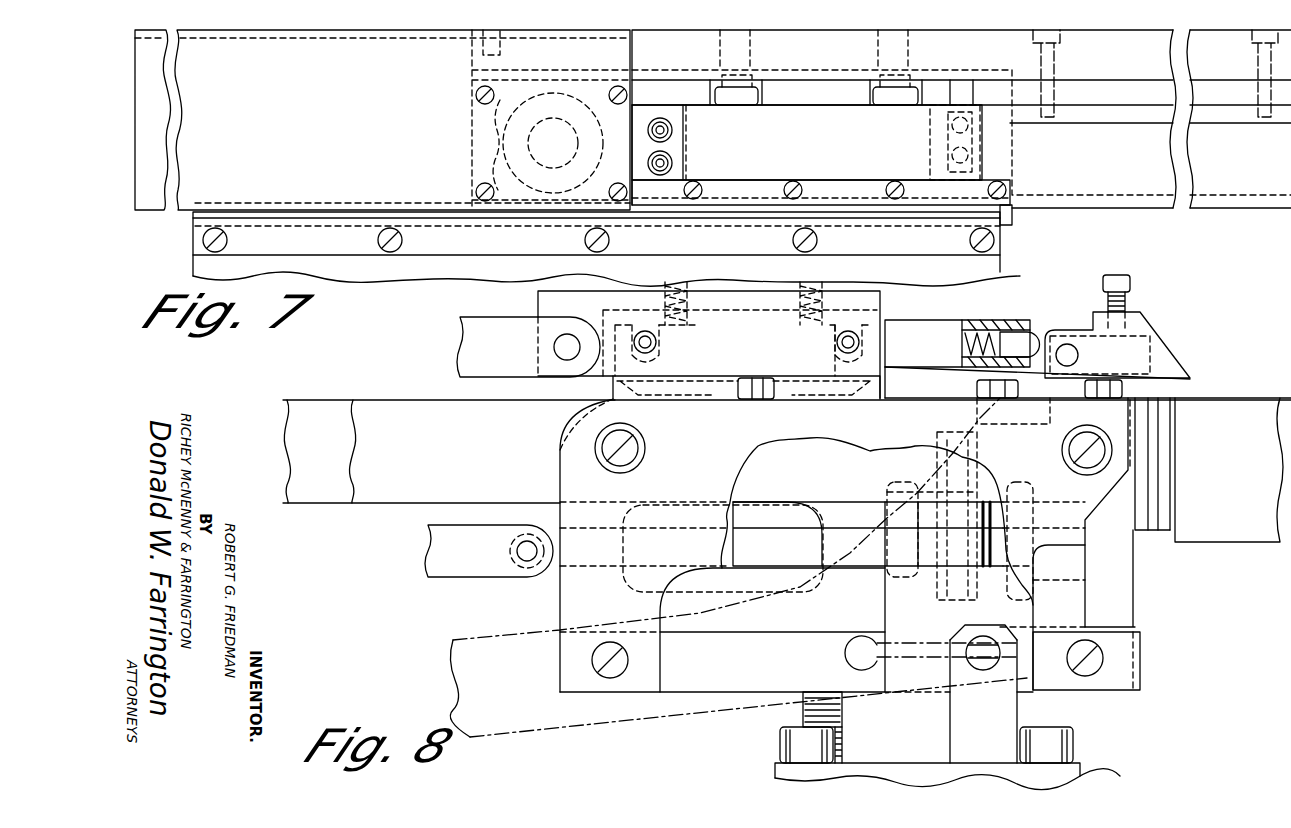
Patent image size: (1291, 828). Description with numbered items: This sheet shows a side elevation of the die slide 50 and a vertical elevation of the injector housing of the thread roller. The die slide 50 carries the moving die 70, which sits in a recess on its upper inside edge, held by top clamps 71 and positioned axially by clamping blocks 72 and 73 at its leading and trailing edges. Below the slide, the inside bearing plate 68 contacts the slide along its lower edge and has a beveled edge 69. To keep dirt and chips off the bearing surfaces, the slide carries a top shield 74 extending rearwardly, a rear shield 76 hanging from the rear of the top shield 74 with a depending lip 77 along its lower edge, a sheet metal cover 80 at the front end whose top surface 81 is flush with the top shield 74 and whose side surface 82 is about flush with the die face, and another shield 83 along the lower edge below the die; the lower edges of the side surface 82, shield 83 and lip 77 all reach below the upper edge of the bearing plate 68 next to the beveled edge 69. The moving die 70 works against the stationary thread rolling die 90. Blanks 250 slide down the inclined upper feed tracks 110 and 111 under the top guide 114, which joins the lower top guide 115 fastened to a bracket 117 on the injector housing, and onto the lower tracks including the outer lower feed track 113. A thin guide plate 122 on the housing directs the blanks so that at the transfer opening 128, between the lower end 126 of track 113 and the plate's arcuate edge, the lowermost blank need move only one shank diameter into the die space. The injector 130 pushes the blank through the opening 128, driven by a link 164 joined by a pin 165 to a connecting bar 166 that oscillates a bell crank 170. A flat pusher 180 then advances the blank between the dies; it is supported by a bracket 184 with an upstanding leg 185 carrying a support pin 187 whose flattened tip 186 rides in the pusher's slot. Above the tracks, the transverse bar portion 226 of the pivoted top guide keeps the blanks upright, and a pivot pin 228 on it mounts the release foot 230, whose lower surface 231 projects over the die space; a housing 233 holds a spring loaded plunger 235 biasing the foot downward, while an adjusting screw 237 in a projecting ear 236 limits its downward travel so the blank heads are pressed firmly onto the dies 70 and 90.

In FIG. 7, the die slide 50 is at (1012, 218).
In FIG. 7, the inside bearing plate 68 is at (426, 228).
In FIG. 7, the beveled edge 69 is at (748, 212).
In FIG. 7, the moving die 70 is at (795, 151).
In FIG. 7, the top clamps 71 is at (750, 99).
In FIG. 7, the clamping block 72 is at (686, 143).
In FIG. 7, the clamping block 73 is at (940, 142).
In FIG. 7, the top shield 74 is at (846, 14).
In FIG. 7, the rear shield 76 is at (1120, 165).
In FIG. 7, the depending lip 77 is at (1138, 204).
In FIG. 7, the sheet metal cover 80 is at (153, 134).
In FIG. 7, the top surface 81 is at (370, 32).
In FIG. 7, the side surface 82 is at (276, 46).
In FIG. 7, the shield 83 is at (862, 190).
In FIG. 8, the stationary thread rolling die 90 is at (1240, 479).
In FIG. 8, the feed track 110 is at (320, 388).
In FIG. 8, the feed track 111 is at (408, 402).
In FIG. 8, the outer lower feed track 113 is at (697, 461).
In FIG. 8, the top guide 114 is at (460, 348).
In FIG. 8, the lower top guide 115 is at (545, 303).
In FIG. 8, the bracket 117 is at (722, 392).
In FIG. 8, the guide plate 122 is at (1164, 401).
In FIG. 8, the lower end 126 is at (1160, 450).
In FIG. 8, the transfer opening 128 is at (1129, 408).
In FIG. 8, the injector 130 is at (1150, 430).
In FIG. 8, the link 164 is at (428, 552).
In FIG. 8, the pin 165 is at (518, 552).
In FIG. 8, the connecting bar 166 is at (783, 554).
In FIG. 8, the bell crank 170 is at (926, 500).
In FIG. 8, the pusher 180 is at (494, 638).
In FIG. 8, the bracket 184 is at (906, 763).
In FIG. 8, the upstanding leg 185 is at (956, 714).
In FIG. 8, the flattened tip 186 is at (984, 644).
In FIG. 8, the support pin 187 is at (972, 668).
In FIG. 8, the transverse bar portion 226 is at (946, 380).
In FIG. 8, the pivot pin 228 is at (1080, 357).
In FIG. 8, the release foot 230 is at (1164, 350).
In FIG. 8, the lower surface 231 is at (1186, 381).
In FIG. 8, the housing 233 is at (940, 327).
In FIG. 8, the spring loaded plunger 235 is at (1005, 311).
In FIG. 8, the projecting ear 236 is at (1092, 322).
In FIG. 8, the adjusting screw 237 is at (1132, 286).
In FIG. 8, the blanks 250 is at (770, 390).